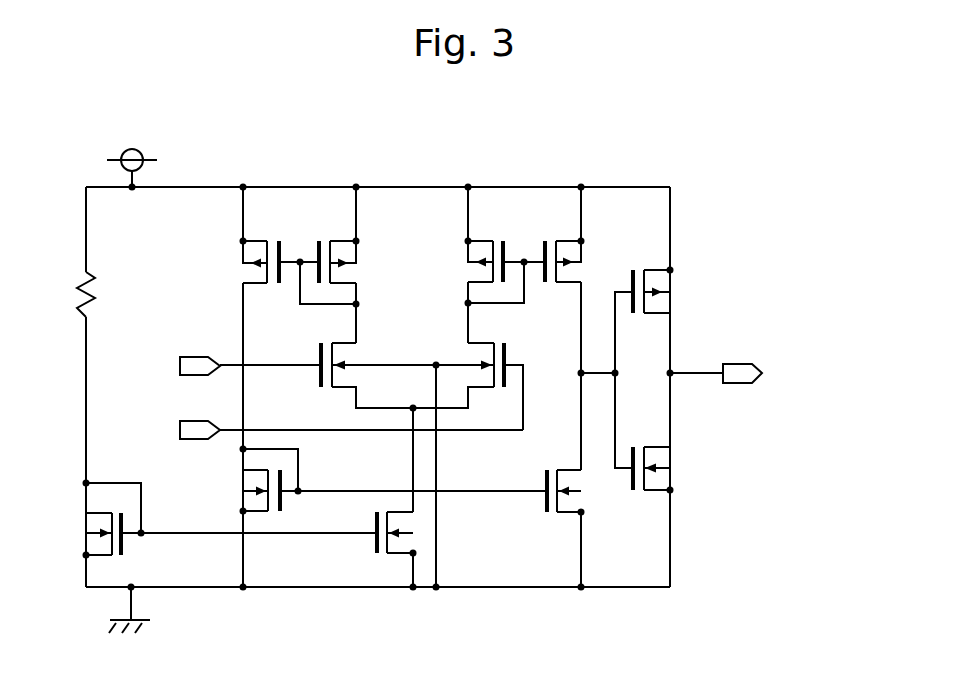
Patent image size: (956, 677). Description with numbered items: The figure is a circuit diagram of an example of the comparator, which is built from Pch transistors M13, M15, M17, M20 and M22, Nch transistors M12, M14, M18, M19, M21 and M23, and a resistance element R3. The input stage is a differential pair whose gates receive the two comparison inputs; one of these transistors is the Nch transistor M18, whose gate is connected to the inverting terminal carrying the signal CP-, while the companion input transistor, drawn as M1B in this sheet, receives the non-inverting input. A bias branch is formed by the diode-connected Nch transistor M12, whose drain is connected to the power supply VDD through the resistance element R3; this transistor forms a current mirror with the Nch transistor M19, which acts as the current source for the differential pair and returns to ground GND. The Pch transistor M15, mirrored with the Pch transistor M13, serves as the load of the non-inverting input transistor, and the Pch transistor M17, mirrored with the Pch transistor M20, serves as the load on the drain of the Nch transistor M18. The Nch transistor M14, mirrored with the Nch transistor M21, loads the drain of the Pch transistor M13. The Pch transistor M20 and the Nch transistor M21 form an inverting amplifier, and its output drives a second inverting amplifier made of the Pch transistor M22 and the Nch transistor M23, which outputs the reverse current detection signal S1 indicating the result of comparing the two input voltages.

The resistance element R3 is at (108, 294).
The Nch transistor M12 is at (88, 519).
The Pch transistor M13 is at (246, 256).
The Nch transistor M14 is at (244, 482).
The Pch transistor M15 is at (358, 267).
The Pch transistor M17 is at (503, 254).
The Nch transistor M18 is at (365, 381).
The PMOS transistor (differential pair, CP- input) M1B is at (487, 379).
The Nch transistor M19 is at (277, 542).
The Pch transistor M20 is at (581, 255).
The Nch transistor M21 is at (439, 507).
The Pch transistor M22 is at (671, 315).
The Nch transistor M23 is at (652, 431).
The power supply VDD is at (132, 154).
The ground terminal GND is at (126, 625).
The signal CP− CP- is at (323, 430).
The reverse current detection signal S1 is at (776, 415).